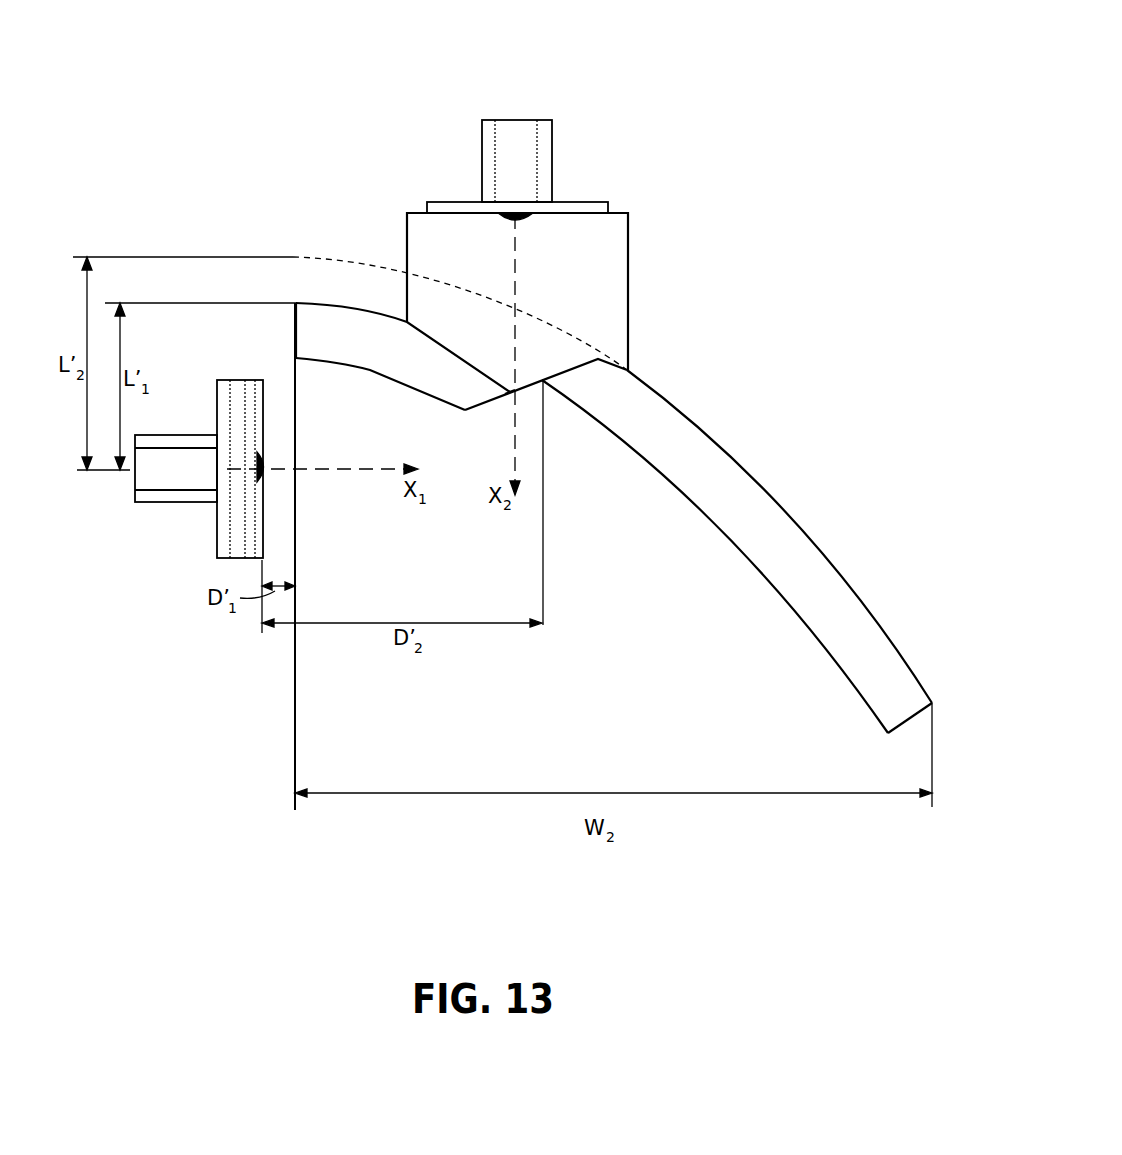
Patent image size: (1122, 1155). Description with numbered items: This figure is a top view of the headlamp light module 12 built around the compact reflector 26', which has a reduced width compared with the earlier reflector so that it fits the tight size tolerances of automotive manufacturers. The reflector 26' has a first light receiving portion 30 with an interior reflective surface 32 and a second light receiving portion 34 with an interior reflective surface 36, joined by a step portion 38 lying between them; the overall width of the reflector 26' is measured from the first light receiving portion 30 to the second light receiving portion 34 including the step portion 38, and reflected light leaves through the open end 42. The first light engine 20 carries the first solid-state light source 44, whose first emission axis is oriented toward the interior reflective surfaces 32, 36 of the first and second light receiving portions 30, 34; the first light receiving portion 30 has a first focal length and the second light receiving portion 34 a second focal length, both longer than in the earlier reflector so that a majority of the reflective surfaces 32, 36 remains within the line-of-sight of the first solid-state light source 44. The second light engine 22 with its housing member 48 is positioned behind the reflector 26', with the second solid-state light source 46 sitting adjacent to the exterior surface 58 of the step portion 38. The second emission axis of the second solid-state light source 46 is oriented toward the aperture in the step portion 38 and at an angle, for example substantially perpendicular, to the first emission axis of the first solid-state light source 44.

The light module 12 is at (150, 91).
The first light engine 20 is at (183, 552).
The second light engine 22 is at (592, 125).
The reflector 26' is at (551, 314).
The first light receiving portion of reflector 30 is at (349, 305).
The interior reflective surface of first light receiving portion 32 is at (370, 370).
The second light receiving portion of reflector 34 is at (762, 492).
The interior reflective surface of second light receiving portion 36 is at (762, 577).
The step portion of reflector 38 is at (480, 402).
The open end of reflector 42 is at (888, 735).
The first solid-state light source 44 is at (263, 470).
The second solid-state light source 46 is at (533, 217).
The housing member 48 is at (630, 288).
The exterior surface of reflector 58 is at (510, 392).